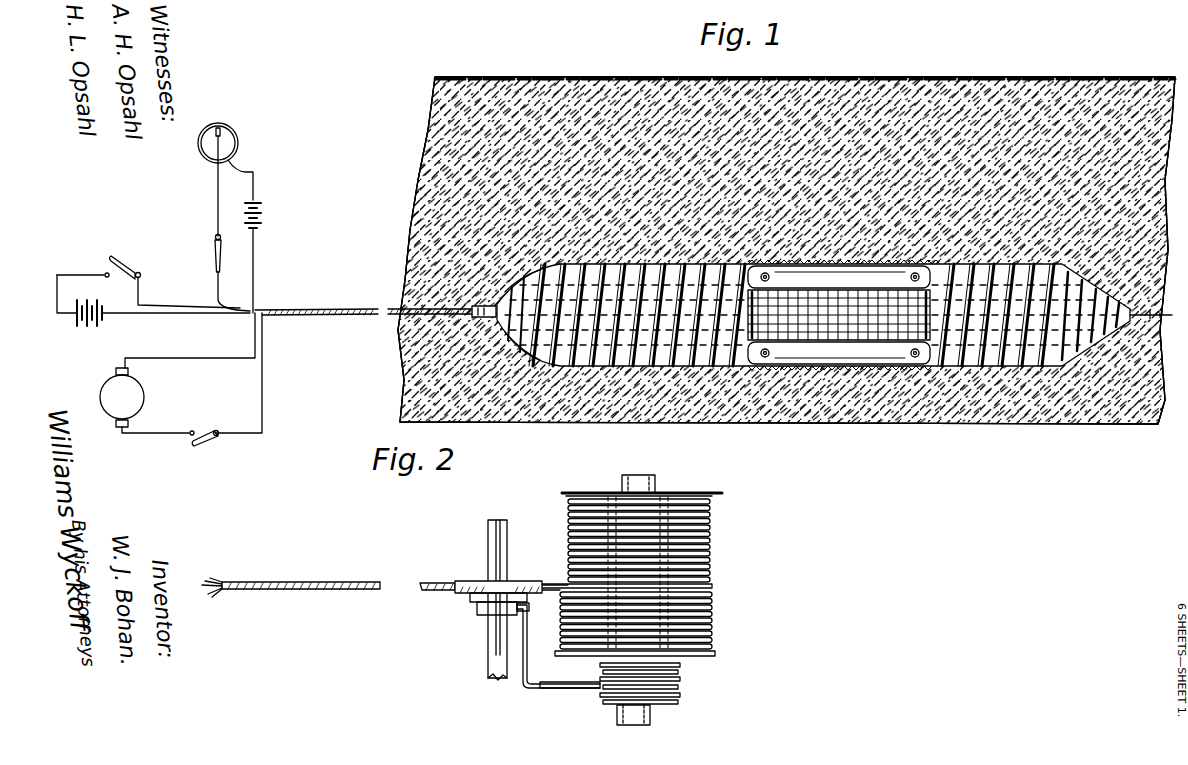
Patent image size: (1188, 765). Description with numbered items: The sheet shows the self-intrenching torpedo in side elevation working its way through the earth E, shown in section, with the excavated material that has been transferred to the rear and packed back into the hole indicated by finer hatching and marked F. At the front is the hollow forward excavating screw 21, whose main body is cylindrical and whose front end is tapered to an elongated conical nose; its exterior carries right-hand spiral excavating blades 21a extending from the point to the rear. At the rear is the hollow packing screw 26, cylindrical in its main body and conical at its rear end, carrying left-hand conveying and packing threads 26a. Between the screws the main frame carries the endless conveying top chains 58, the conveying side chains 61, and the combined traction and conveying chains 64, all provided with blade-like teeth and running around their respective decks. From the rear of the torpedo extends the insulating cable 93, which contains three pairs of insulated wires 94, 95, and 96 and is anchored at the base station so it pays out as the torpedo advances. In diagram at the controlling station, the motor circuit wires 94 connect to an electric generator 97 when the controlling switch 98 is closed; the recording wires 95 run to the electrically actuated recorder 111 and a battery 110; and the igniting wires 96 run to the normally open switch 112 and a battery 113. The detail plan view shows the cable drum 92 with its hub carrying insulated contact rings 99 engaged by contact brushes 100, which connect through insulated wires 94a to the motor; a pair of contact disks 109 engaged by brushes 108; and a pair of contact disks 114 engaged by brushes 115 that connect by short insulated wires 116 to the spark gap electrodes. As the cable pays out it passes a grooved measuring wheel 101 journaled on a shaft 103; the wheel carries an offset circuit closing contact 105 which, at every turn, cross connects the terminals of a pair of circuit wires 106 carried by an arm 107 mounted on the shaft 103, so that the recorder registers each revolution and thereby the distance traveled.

In FIG. 1, the earth E is at (542, 100).
In FIG. 1, the packed excavated material F is at (405, 345).
In FIG. 1, the endless conveying top chains 58 is at (866, 272).
In FIG. 1, the packing screw 26 is at (603, 372).
In FIG. 1, the packing threads 26a is at (628, 372).
In FIG. 1, the conveying side chains 61 is at (795, 366).
In FIG. 1, the combined traction and conveying chains 64 is at (850, 366).
In FIG. 1, the forward excavating screw 21 is at (985, 370).
In FIG. 1, the excavating blades 21a is at (1000, 368).
In FIG. 1, the insulating cable 93 is at (385, 311).
In FIG. 2, the insulating cable 93 is at (312, 582).
In FIG. 1, the electric recorder 111 is at (236, 147).
In FIG. 1, the battery 110 is at (260, 214).
In FIG. 1, the recording circuit wires 95 is at (255, 268).
In FIG. 2, the recording circuit wires 95 is at (215, 580).
In FIG. 1, the controlling switch 112 is at (126, 264).
In FIG. 1, the igniting circuit wires 96 is at (168, 313).
In FIG. 2, the igniting circuit wires 96 is at (205, 584).
In FIG. 1, the battery 113 is at (87, 326).
In FIG. 1, the motor circuit wires 94 is at (258, 360).
In FIG. 2, the motor circuit wires 94 is at (214, 593).
In FIG. 1, the electric generator 97 is at (140, 398).
In FIG. 1, the controlling switch 98 is at (204, 445).
In FIG. 2, the cable drum 92 is at (720, 494).
In FIG. 2, the insulated contact disks 114 is at (660, 670).
In FIG. 2, the contact brushes 115 is at (685, 668).
In FIG. 2, the short insulated wires 116 is at (690, 676).
In FIG. 2, the contact disks 109 is at (685, 688).
In FIG. 2, the insulated circuit wires 94a is at (685, 696).
In FIG. 2, the contact brushes 100 is at (683, 703).
In FIG. 2, the contact rings 99 is at (652, 712).
In FIG. 2, the brushes 108 is at (590, 690).
In FIG. 2, the circuit wires 106 is at (525, 690).
In FIG. 2, the shaft 103 is at (488, 668).
In FIG. 2, the arm 107 is at (500, 608).
In FIG. 2, the circuit closing contact 105 is at (540, 580).
In FIG. 2, the measuring wheel 101 is at (527, 594).